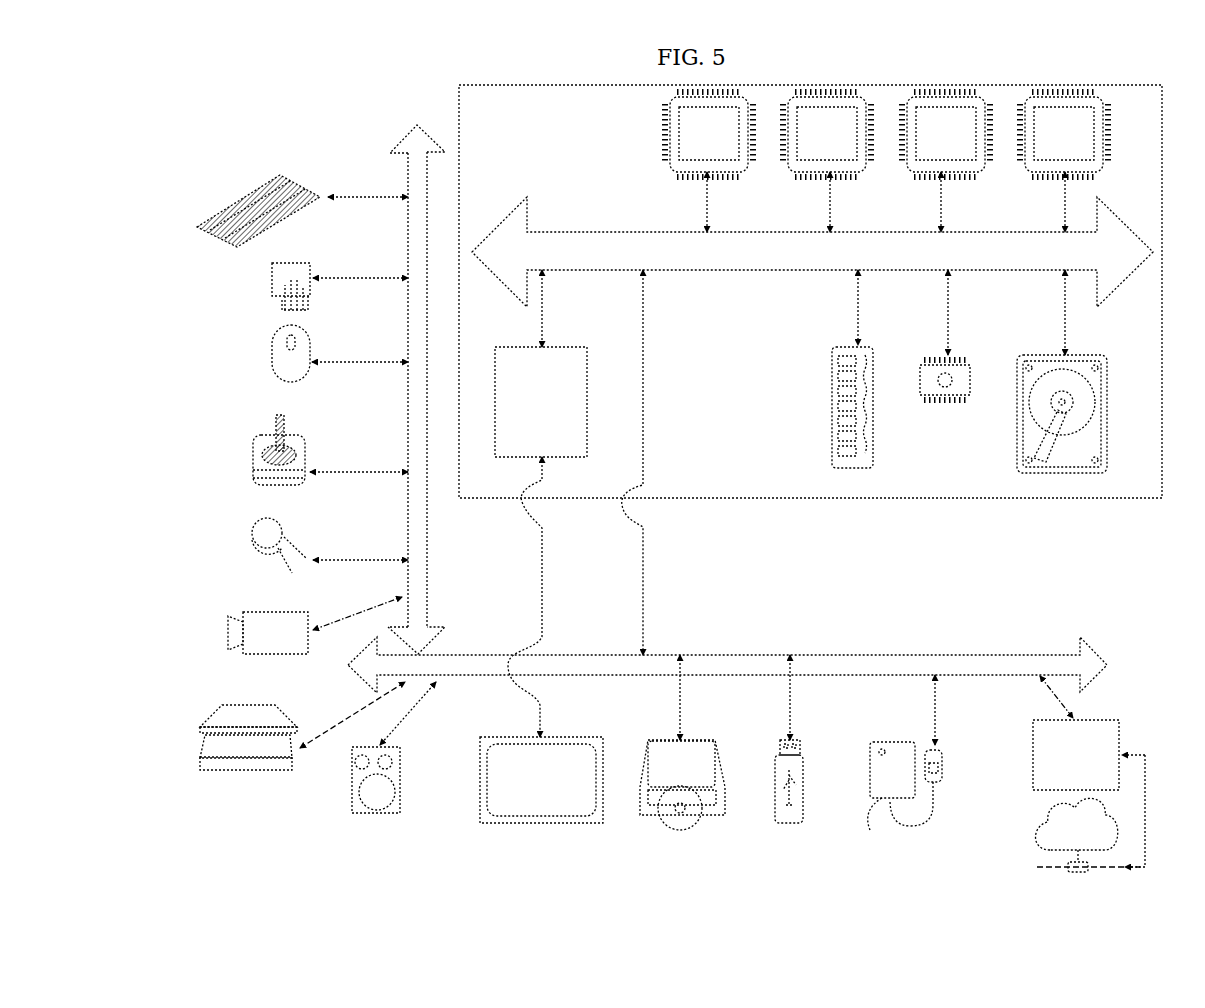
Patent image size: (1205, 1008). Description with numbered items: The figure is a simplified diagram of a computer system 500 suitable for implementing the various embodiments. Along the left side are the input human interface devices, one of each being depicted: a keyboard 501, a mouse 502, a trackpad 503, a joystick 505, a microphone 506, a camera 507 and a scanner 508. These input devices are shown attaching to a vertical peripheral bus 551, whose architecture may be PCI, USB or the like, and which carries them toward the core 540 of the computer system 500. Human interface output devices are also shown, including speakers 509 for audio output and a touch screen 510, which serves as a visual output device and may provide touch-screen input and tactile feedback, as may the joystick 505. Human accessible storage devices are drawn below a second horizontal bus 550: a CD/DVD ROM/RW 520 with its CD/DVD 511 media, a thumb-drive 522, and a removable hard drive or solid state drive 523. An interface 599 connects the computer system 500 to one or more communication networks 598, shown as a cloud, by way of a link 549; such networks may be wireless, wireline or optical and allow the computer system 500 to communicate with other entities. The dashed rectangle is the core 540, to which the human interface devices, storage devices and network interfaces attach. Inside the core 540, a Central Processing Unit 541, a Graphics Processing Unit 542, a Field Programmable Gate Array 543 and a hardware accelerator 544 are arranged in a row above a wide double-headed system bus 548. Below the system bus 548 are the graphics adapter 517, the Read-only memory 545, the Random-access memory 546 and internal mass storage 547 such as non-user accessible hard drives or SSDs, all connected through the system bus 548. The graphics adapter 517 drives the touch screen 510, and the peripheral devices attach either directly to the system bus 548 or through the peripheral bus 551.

The computer system 500 is at (158, 122).
The keyboard 501 is at (196, 228).
The mouse 502 is at (268, 358).
The trackpad 503 is at (268, 289).
The joystick 505 is at (252, 468).
The microphone 506 is at (250, 540).
The camera 507 is at (230, 644).
The scanner 508 is at (198, 760).
The speakers 509 is at (375, 813).
The touch screen 510 is at (543, 823).
The CD/DVD 511 is at (665, 820).
The graphics adapter 517 is at (588, 442).
The CD/DVD ROM/RW 520 is at (712, 815).
The thumb-drive 522 is at (785, 825).
The removable hard drive or solid state drive 523 is at (902, 767).
The core 540 is at (800, 503).
The Central Processing Unit 541 is at (677, 178).
The Graphics Processing Unit 542 is at (793, 176).
The Field Programmable Gate Array 543 is at (913, 170).
The hardware accelerator 544 is at (1030, 170).
The Read-only memory 545 is at (932, 402).
The Random-access memory 546 is at (830, 405).
The internal mass storage 547 is at (1030, 355).
The system bus 548 is at (785, 272).
The network link 549 is at (1147, 768).
The peripheral bus 550 is at (936, 656).
The peripheral bus 551 is at (392, 156).
The communication networks 598 is at (1037, 840).
The interface 599 is at (1033, 722).